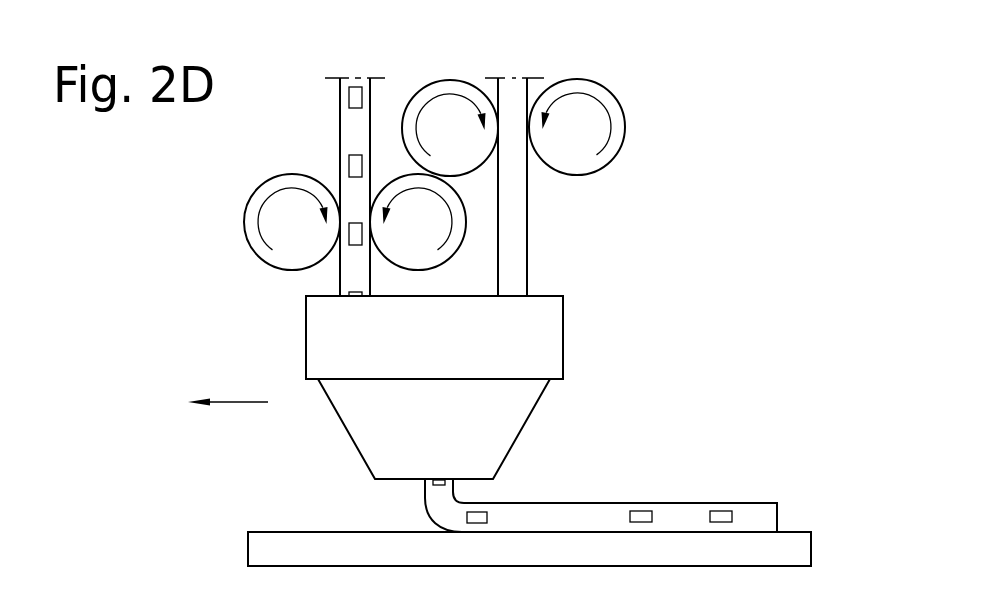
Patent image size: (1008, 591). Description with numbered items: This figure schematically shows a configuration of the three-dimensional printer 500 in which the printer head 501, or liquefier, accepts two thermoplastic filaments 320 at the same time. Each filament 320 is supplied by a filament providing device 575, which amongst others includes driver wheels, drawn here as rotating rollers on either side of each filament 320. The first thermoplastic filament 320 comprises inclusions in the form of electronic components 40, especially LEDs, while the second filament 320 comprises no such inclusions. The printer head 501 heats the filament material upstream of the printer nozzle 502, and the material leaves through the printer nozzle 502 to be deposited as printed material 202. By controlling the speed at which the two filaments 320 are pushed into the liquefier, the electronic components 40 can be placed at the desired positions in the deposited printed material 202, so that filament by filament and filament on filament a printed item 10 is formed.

The 3D item 10 is at (798, 510).
The electronic components 40 is at (349, 95).
The 3D printed material 202 is at (553, 517).
The filament 320 is at (360, 127).
The 3D printer 500 is at (727, 200).
The printer head 501 is at (472, 342).
The printer nozzle 502 is at (406, 483).
The filament providing device 575 is at (348, 62).